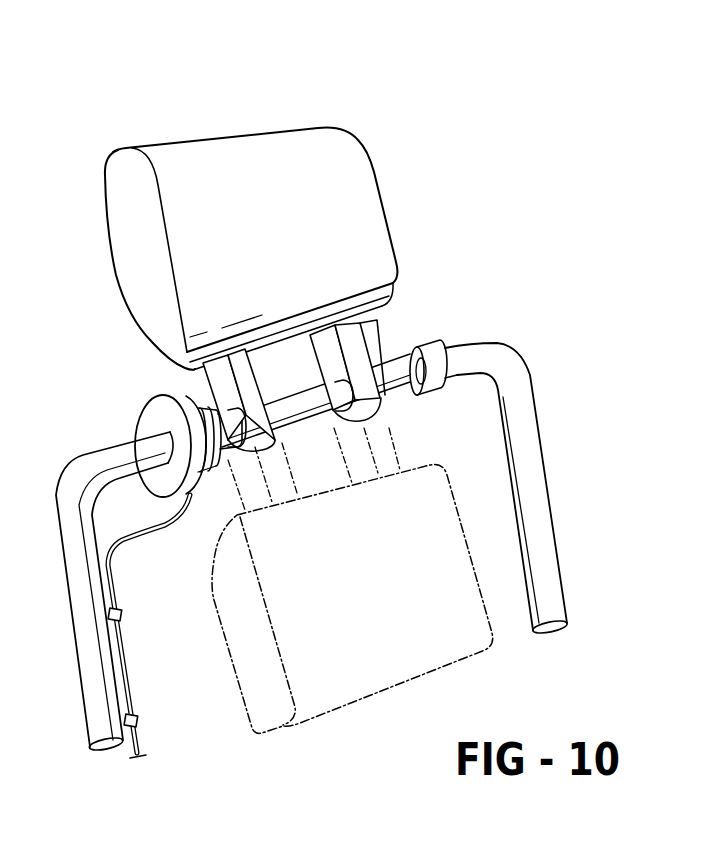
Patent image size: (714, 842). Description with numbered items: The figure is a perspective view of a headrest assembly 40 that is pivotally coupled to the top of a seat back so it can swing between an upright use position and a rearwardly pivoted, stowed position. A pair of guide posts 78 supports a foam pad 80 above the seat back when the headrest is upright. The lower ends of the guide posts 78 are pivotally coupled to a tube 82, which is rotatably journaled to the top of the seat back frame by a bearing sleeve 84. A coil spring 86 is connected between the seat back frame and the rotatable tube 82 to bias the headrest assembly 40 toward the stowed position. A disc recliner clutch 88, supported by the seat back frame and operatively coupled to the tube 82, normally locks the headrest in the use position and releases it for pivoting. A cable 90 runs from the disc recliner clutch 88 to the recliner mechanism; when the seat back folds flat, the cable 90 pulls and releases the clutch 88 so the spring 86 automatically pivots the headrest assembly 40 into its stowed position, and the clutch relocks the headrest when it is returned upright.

The headrest assembly 40 is at (263, 212).
The guide posts 78 is at (254, 367).
The foam pad 80 is at (260, 232).
The tube 82 is at (306, 419).
The bearing sleeve 84 is at (450, 365).
The coil spring 86 is at (197, 393).
The disc recliner clutch 88 is at (147, 417).
The cable 90 is at (128, 684).